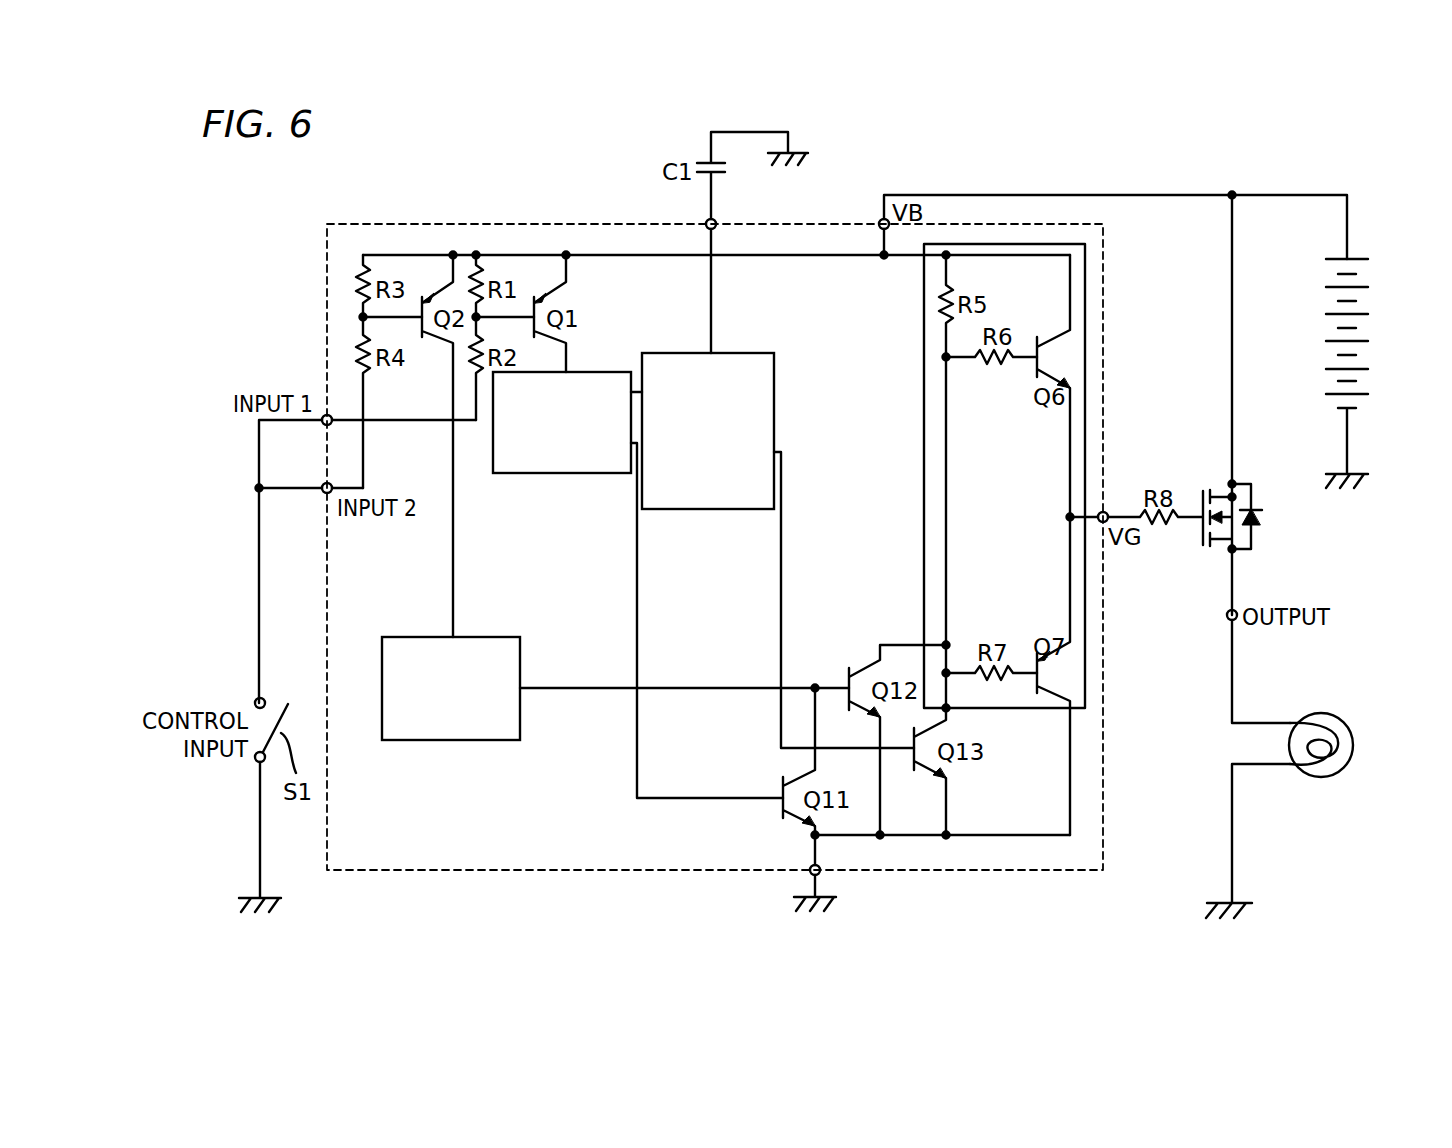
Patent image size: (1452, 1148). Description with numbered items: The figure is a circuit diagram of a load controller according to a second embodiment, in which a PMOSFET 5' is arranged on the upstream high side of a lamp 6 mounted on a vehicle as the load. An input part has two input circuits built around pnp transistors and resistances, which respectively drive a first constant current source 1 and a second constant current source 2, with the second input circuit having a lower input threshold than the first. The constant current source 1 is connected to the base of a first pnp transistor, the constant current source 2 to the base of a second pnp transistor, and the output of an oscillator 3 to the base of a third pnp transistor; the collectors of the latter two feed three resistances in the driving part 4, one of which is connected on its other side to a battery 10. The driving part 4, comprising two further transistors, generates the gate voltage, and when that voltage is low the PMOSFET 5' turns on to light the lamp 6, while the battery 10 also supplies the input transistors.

The constant current source 1 is at (577, 370).
The constant current source 2 is at (490, 637).
The oscillator 3 is at (740, 352).
The driving part 4 is at (922, 468).
The PMOSFET 5' is at (1199, 404).
The lamp 6 is at (1326, 713).
The battery 10 is at (1366, 331).